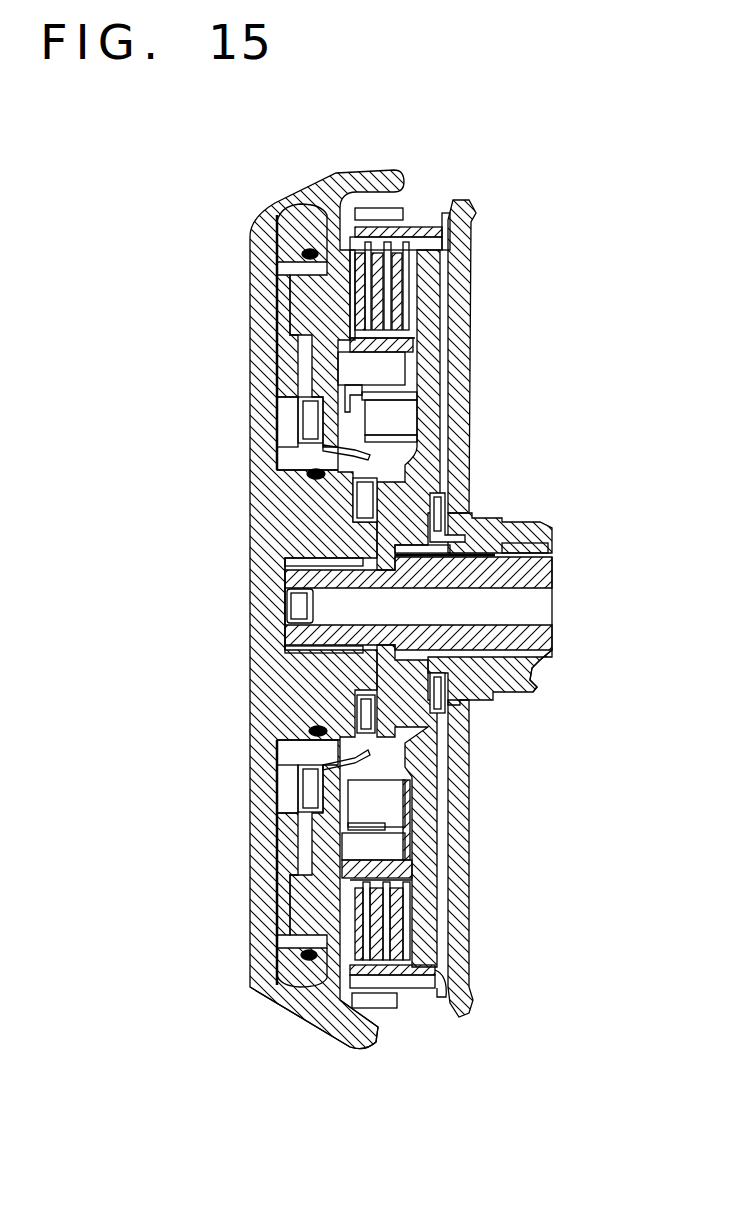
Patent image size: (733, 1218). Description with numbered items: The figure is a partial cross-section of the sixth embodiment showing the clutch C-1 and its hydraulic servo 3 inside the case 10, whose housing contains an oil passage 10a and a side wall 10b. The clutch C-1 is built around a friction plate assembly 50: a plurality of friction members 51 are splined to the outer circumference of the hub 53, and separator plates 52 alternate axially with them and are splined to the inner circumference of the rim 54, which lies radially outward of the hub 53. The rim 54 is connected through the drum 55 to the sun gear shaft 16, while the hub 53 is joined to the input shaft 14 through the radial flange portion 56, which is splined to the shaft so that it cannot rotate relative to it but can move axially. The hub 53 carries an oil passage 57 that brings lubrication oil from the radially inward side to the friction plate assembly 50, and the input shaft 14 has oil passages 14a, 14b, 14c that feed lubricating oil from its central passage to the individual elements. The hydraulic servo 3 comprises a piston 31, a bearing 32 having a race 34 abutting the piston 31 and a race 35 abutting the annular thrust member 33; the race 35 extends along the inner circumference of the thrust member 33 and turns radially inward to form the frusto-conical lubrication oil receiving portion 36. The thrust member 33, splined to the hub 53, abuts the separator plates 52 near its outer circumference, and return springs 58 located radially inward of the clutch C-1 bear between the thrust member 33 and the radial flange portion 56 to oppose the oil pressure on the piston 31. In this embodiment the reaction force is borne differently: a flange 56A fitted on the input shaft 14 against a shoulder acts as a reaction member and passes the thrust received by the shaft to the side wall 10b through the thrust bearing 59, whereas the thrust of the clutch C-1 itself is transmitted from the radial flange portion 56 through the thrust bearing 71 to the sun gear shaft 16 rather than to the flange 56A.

The case 10 is at (362, 173).
The oil passage in the housing 10a is at (290, 673).
The side wall 10b is at (330, 998).
The clutch C-1 is at (399, 163).
The hydraulic servo 3 is at (279, 250).
The piston 31 is at (272, 362).
The bearing 32 is at (300, 420).
The lubrication oil receiving portion 36 is at (363, 457).
The friction members 51 is at (377, 228).
The separator plates 52 is at (412, 222).
The hub 53 is at (348, 366).
The rim 54 is at (446, 210).
The drum 55 is at (470, 247).
The radial flange portion 56 is at (437, 415).
The flange 56A is at (375, 542).
The return springs 58 is at (368, 416).
The thrust bearing 71 is at (440, 513).
The sun gear shaft 16 is at (545, 530).
The input shaft 14 is at (557, 575).
The oil passage 14a is at (537, 628).
The oil passage 14b is at (518, 590).
The oil passage 14c is at (370, 590).
The thrust bearing 59 is at (367, 733).
The thrust member 33 is at (290, 848).
The race 34 is at (310, 790).
The race 35 is at (349, 796).
The oil passage 57 is at (350, 848).
The friction plate assembly 50 is at (418, 928).